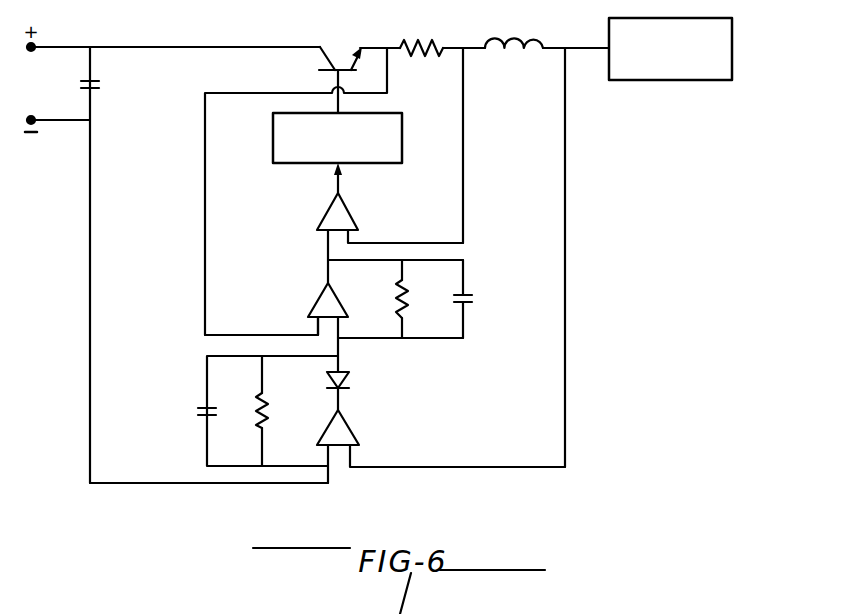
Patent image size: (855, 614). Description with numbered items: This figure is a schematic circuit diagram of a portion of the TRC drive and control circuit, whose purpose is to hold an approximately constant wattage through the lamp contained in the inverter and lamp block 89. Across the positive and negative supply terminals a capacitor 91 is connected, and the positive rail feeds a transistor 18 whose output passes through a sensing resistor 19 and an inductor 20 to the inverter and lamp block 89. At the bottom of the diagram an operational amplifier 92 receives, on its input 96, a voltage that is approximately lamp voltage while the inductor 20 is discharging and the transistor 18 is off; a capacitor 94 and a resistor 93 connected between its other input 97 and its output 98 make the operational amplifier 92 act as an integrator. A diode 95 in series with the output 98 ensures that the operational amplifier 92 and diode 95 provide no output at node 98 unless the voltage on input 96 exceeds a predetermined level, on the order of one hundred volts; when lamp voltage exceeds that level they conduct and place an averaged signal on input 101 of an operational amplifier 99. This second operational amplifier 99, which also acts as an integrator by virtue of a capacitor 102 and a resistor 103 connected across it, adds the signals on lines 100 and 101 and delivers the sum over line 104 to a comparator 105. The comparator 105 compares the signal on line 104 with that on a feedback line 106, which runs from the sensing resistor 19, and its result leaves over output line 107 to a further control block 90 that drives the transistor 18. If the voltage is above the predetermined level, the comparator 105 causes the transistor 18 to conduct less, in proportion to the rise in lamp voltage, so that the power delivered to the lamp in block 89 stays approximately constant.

The transistor 18 is at (328, 53).
The sensing resistor 19 is at (427, 42).
The inductor 20 is at (516, 42).
The inverter and lamp block 89 is at (732, 48).
The further control 90 is at (273, 136).
The capacitor 91 is at (80, 85).
The operational amplifier 92 is at (355, 422).
The resistor 93 is at (267, 405).
The capacitor 94 is at (199, 411).
The diode 95 is at (348, 384).
The input 96 is at (352, 462).
The input 97 is at (329, 478).
The output node 98 is at (341, 358).
The operational amplifier 99 is at (320, 290).
The line 100 is at (312, 331).
The input 101 is at (344, 334).
The capacitor 102 is at (474, 291).
The resistor 103 is at (398, 290).
The line 104 is at (327, 248).
The comparator 105 is at (325, 208).
The feedback line 106 is at (378, 242).
The output line 107 is at (336, 187).